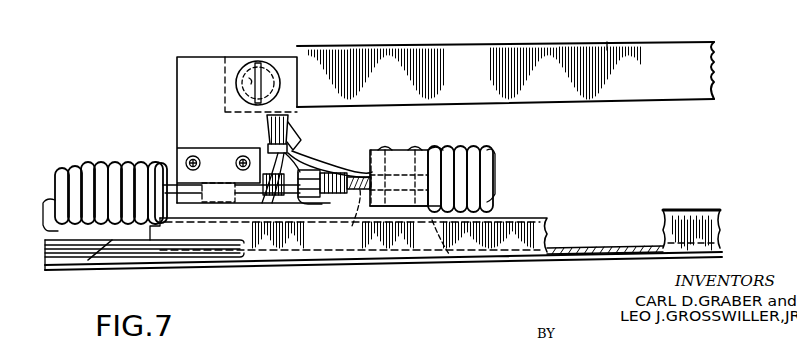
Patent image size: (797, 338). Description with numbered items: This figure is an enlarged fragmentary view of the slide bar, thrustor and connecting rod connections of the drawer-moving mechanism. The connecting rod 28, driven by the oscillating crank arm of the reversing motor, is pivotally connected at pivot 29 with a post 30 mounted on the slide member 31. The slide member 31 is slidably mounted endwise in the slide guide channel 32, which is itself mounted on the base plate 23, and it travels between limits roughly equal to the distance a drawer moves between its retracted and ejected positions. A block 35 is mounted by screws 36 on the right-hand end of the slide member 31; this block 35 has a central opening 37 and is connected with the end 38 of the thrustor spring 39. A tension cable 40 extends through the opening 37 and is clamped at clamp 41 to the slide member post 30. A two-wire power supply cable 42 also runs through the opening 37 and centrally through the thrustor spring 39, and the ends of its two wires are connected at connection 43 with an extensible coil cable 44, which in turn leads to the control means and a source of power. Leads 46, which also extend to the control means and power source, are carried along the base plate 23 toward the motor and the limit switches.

The base plate 23 is at (706, 252).
The connecting rod 28 is at (685, 58).
The pivotal connection 29 is at (236, 78).
The post 30 is at (198, 78).
The slide member 31 is at (452, 257).
The slide guide channel 32 is at (510, 224).
The block 35 is at (399, 150).
The screws 36 is at (371, 165).
The central opening 37 is at (348, 219).
The end of thrustor spring 38 is at (441, 148).
The thrustor spring 39 is at (488, 162).
The tension cable 40 is at (344, 194).
The clamp 41 is at (322, 194).
The power supply cable 42 is at (336, 165).
The wire connection 43 is at (278, 128).
The extensible coil cable 44 is at (101, 195).
The leads 46 is at (195, 248).